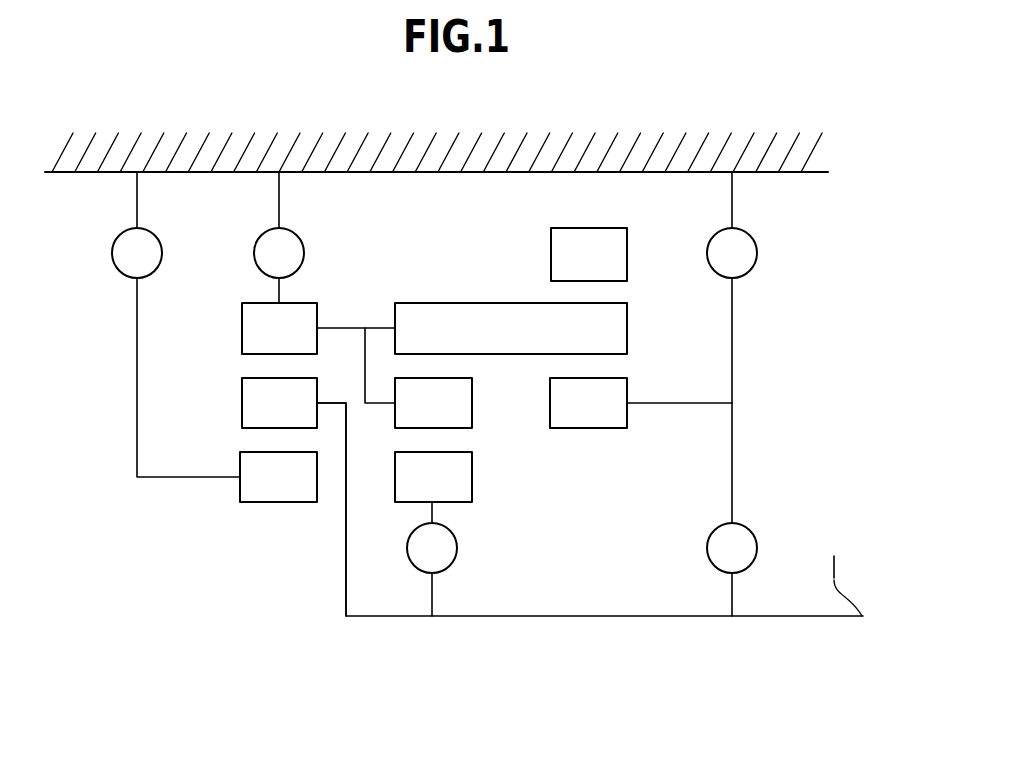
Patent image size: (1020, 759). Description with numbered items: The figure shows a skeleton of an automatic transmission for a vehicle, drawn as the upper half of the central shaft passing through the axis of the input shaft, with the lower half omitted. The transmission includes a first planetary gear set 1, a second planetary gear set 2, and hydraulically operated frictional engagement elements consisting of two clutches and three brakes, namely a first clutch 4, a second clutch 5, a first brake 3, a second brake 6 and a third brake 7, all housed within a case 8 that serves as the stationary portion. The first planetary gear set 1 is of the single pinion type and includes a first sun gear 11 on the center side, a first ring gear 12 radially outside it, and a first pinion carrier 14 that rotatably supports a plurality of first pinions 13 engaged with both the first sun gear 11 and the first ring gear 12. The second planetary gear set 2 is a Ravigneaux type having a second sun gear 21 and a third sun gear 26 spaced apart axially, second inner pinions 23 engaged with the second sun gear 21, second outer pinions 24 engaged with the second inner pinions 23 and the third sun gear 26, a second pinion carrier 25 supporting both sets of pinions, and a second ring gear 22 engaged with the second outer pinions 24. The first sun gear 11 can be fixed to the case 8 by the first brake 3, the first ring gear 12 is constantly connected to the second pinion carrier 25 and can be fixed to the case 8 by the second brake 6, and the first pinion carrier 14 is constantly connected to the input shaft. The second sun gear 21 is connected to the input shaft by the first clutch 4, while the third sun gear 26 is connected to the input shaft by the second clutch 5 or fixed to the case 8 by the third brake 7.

The first planetary gear set 1 is at (283, 528).
The second planetary gear set 2 is at (577, 497).
The first brake 3 is at (112, 253).
The first clutch 4 is at (457, 548).
The second clutch 5 is at (757, 548).
The second brake 6 is at (254, 253).
The third brake 7 is at (757, 253).
The case 8 is at (451, 122).
The first sun gear 11 is at (240, 463).
The first ring gear 12 is at (242, 330).
The first pinions 13 is at (242, 403).
The first pinion carrier 14 is at (333, 400).
The second sun gear 21 is at (472, 477).
The second ring gear 22 is at (551, 253).
The second inner pinions 23 is at (472, 402).
The second outer pinions 24 is at (627, 330).
The second pinion carrier 25 is at (382, 327).
The third sun gear 26 is at (627, 390).